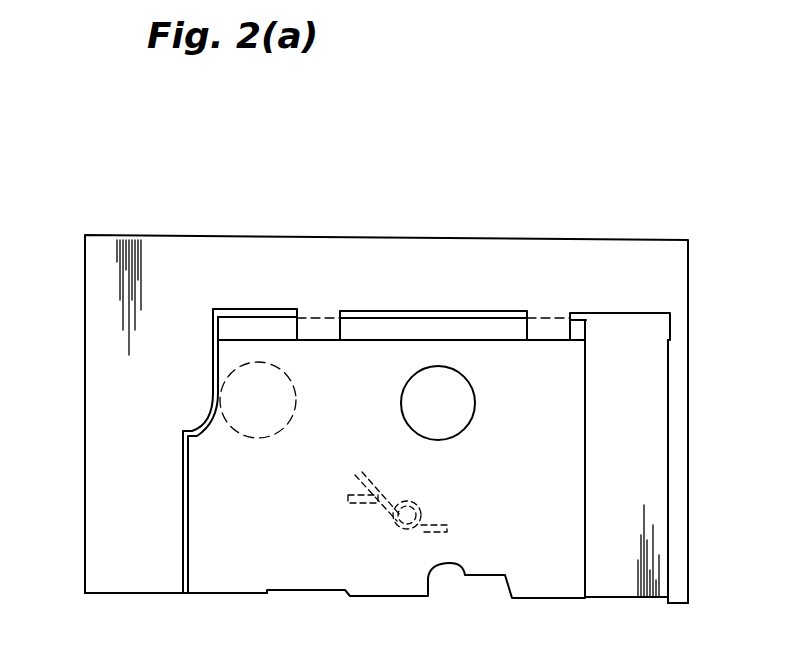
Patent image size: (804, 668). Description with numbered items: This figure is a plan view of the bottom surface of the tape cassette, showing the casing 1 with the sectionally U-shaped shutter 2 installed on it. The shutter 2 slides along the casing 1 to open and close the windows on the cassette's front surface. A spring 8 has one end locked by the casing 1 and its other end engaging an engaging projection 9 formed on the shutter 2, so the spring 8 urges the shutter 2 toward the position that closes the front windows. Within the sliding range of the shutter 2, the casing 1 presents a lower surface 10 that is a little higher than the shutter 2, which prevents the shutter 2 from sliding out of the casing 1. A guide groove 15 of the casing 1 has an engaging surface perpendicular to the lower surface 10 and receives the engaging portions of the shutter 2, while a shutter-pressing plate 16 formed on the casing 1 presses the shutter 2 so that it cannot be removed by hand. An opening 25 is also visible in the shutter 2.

The casing 1 is at (122, 455).
The shutter 2 is at (370, 370).
The spring 8 is at (432, 523).
The engaging projection 9 is at (357, 505).
The lower surface 10 is at (630, 483).
The guide groove 15 is at (652, 328).
The shutter-pressing plate 16 is at (318, 318).
The hole 25 is at (438, 366).